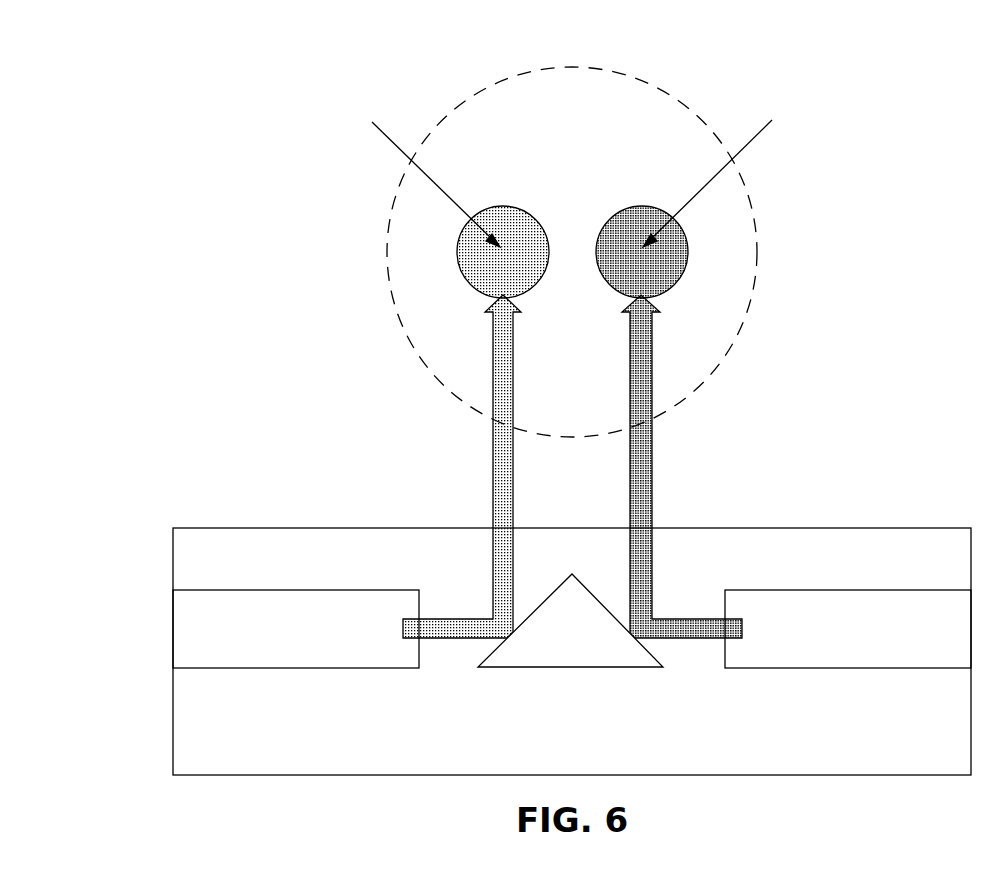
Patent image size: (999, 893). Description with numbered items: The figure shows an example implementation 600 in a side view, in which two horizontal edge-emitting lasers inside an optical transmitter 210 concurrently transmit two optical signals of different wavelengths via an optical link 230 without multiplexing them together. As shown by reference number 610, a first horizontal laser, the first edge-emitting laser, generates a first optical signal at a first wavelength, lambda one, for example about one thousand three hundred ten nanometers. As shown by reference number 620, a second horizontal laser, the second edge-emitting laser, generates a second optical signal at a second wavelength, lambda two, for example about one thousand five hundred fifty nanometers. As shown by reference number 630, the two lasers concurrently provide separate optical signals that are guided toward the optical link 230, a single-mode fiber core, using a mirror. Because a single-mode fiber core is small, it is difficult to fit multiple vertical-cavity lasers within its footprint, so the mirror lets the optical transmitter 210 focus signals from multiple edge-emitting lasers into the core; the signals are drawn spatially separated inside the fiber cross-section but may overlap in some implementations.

The example implementation 600 is at (120, 31).
The optical transmitter 210 is at (572, 651).
The optical link 230 is at (755, 250).
The first optical signal generation 610 is at (493, 481).
The second optical signal generation 620 is at (652, 483).
The mirror guiding of optical signals 630 is at (570, 620).